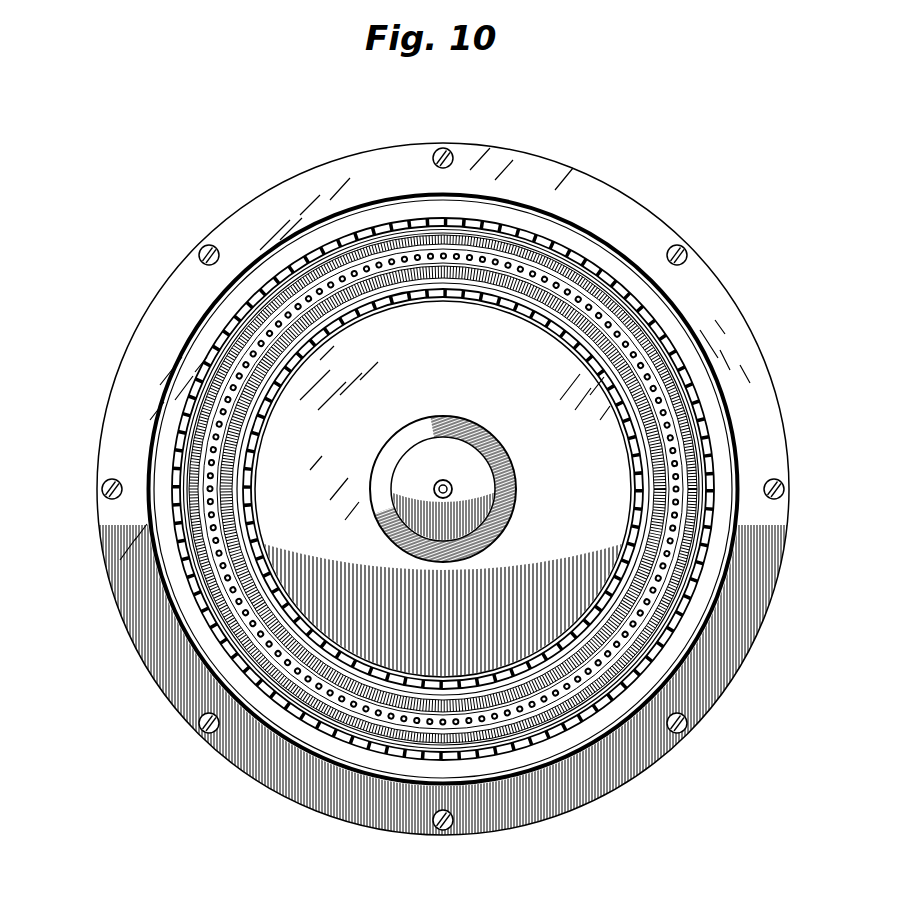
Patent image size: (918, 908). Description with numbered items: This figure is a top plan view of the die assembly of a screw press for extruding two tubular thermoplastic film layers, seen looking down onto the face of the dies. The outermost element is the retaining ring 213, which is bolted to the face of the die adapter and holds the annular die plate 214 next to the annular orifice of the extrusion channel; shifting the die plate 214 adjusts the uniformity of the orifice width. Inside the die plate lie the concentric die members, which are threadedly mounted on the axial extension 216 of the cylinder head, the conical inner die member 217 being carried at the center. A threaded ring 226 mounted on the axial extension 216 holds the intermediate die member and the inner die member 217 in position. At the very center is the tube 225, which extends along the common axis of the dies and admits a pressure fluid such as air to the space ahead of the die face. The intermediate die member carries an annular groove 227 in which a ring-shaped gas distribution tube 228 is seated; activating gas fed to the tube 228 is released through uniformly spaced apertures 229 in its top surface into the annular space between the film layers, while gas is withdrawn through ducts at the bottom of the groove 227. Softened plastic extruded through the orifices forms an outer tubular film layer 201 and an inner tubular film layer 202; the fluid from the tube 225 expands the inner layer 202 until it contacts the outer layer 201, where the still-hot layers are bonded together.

The outer tubular film layer 201 is at (707, 433).
The inner tubular film layer 202 is at (635, 465).
The retaining ring 213 is at (132, 623).
The annular die plate 214 is at (198, 627).
The axial extension 216 is at (457, 452).
The conical inner die member 217 is at (367, 427).
The tube 225 is at (452, 483).
The threaded ring 226 is at (516, 488).
The annular groove 227 is at (542, 252).
The gas distribution tube 228 is at (565, 282).
The apertures 229 is at (598, 320).